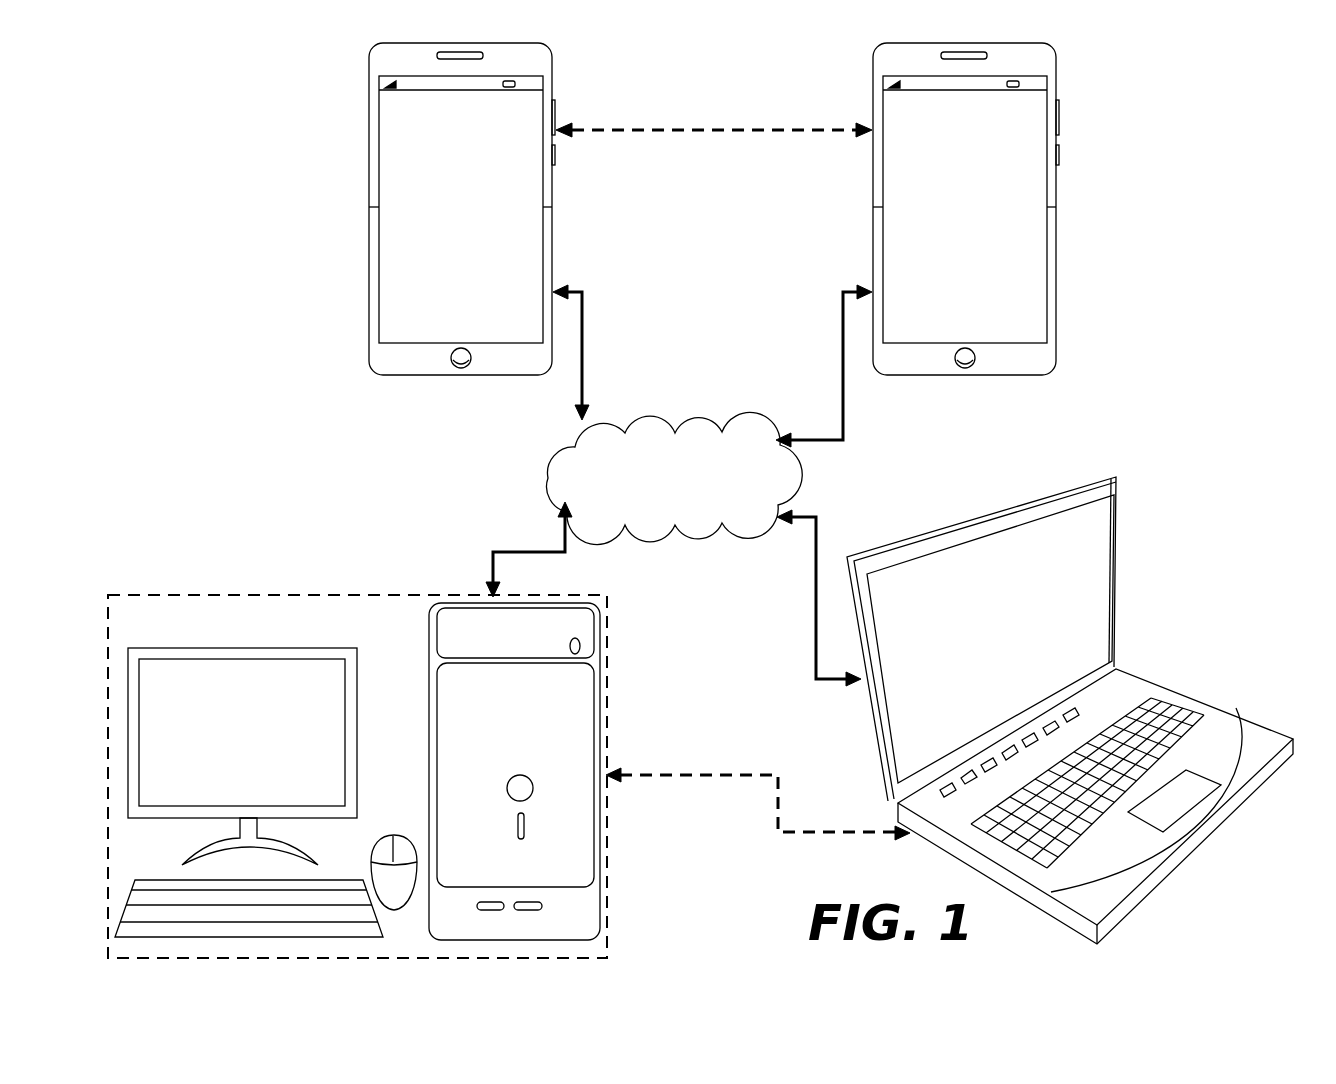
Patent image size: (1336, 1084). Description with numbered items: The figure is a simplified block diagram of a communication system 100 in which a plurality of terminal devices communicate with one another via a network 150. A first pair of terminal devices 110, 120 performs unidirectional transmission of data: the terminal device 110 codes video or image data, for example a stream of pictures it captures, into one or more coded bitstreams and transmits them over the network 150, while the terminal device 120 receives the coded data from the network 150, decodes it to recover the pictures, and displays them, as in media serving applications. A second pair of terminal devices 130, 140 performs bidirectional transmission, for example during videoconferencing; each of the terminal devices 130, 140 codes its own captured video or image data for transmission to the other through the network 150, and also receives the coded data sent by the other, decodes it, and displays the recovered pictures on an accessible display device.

The communication system 100 is at (1150, 182).
The terminal device 110 is at (1118, 561).
The terminal device 120 is at (607, 897).
The terminal device 130 is at (369, 170).
The terminal device 140 is at (873, 180).
The network 150 is at (657, 523).